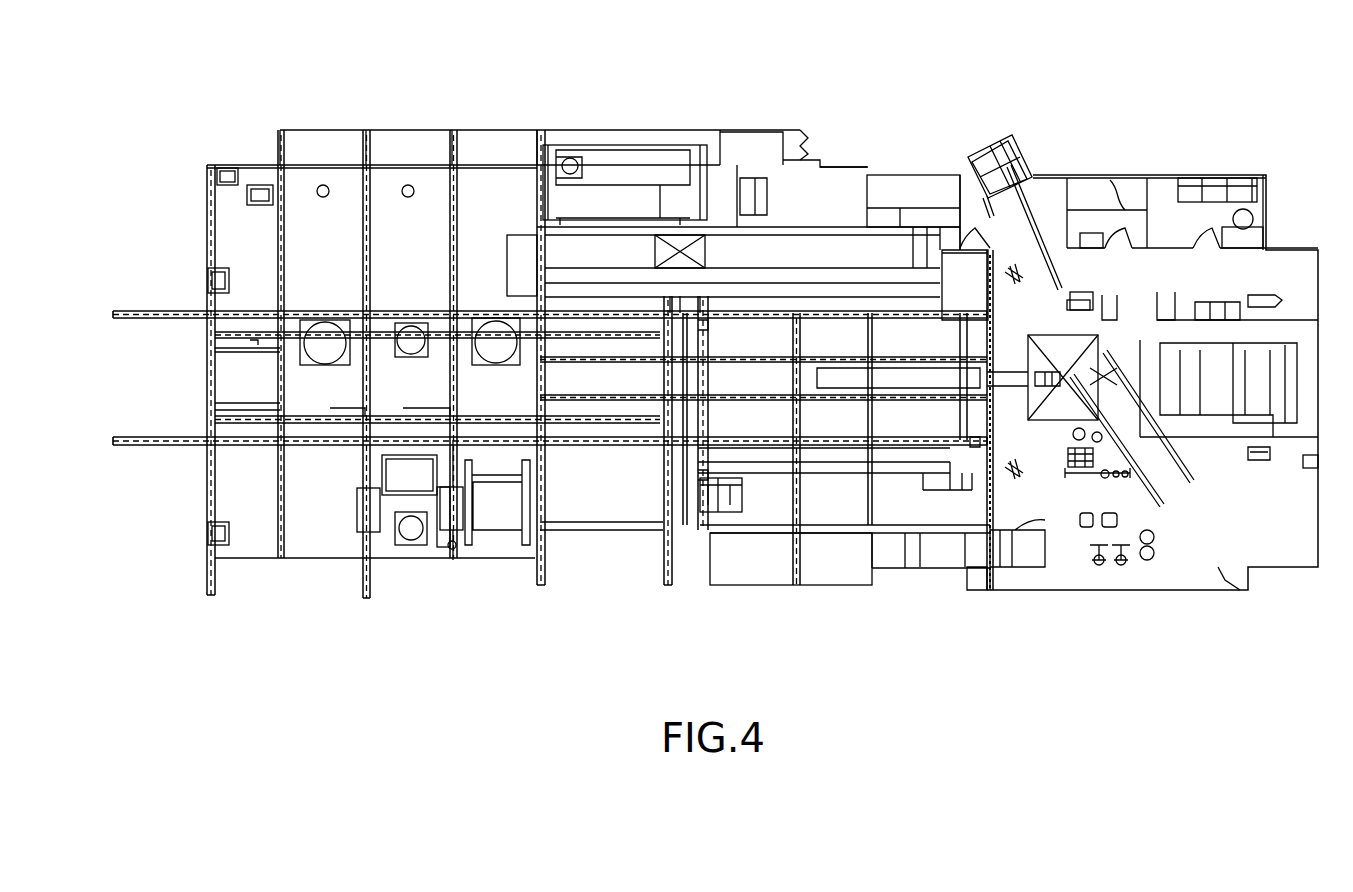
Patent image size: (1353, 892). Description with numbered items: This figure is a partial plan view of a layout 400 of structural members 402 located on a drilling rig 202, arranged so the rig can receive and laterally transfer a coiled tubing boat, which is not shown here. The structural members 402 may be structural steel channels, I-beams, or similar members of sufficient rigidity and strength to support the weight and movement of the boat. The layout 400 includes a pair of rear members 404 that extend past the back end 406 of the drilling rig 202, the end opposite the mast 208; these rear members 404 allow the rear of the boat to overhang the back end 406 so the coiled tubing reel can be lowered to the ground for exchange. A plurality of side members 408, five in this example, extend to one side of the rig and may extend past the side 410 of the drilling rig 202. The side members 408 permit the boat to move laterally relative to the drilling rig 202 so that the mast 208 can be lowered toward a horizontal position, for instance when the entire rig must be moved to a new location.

The drilling rig 202 is at (1220, 165).
The mast 208 is at (1062, 335).
The layout 400 is at (363, 600).
The structural members 402 is at (363, 475).
The rear members 404 is at (147, 318).
The back end 406 is at (208, 188).
The side members 408 is at (662, 571).
The side 410 is at (688, 530).